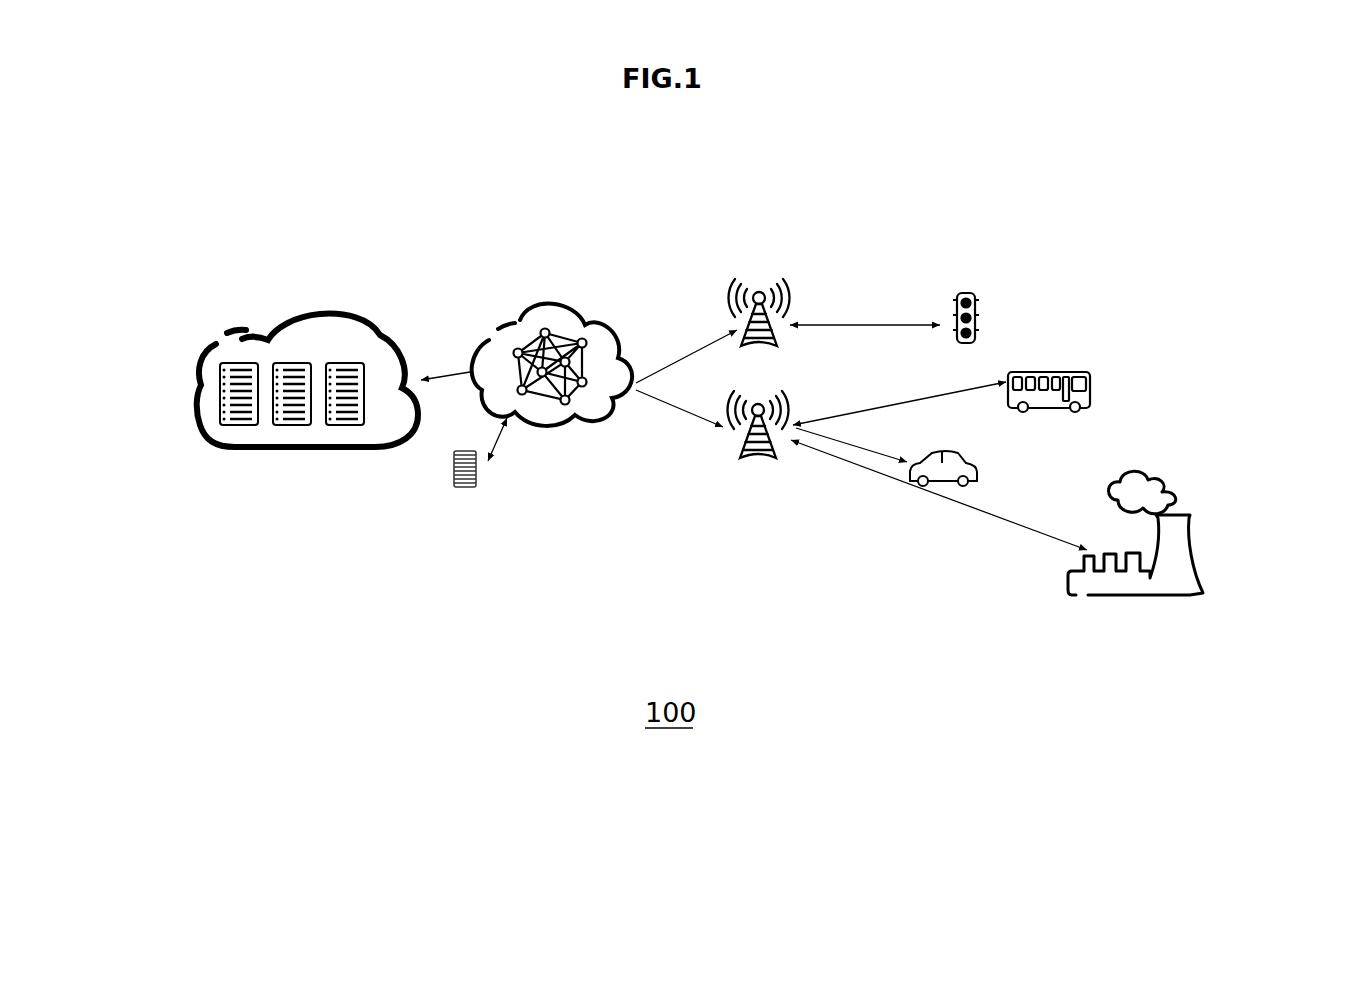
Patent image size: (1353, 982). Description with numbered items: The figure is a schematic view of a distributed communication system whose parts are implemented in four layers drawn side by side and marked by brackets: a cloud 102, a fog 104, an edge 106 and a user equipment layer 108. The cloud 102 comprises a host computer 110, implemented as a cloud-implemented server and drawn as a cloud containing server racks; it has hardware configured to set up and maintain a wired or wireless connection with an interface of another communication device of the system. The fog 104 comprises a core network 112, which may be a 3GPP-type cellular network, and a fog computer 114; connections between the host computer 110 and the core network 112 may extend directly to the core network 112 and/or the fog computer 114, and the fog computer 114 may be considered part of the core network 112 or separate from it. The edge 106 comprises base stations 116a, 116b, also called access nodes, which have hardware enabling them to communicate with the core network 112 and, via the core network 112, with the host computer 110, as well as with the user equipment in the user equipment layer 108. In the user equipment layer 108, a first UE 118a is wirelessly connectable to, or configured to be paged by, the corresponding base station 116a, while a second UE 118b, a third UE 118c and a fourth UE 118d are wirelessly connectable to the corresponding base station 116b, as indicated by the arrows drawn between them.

The cloud 102 is at (422, 260).
The fog 104 is at (628, 260).
The edge 106 is at (825, 260).
The user equipment layer 108 is at (1255, 260).
The host computer 110 is at (203, 443).
The core network 112 is at (558, 425).
The fog computer 114 is at (453, 463).
The base station 116a is at (775, 348).
The base station 116b is at (743, 460).
The first UE 118a is at (977, 296).
The second UE 118b is at (1085, 378).
The third UE 118c is at (955, 462).
The fourth UE 118d is at (1183, 556).